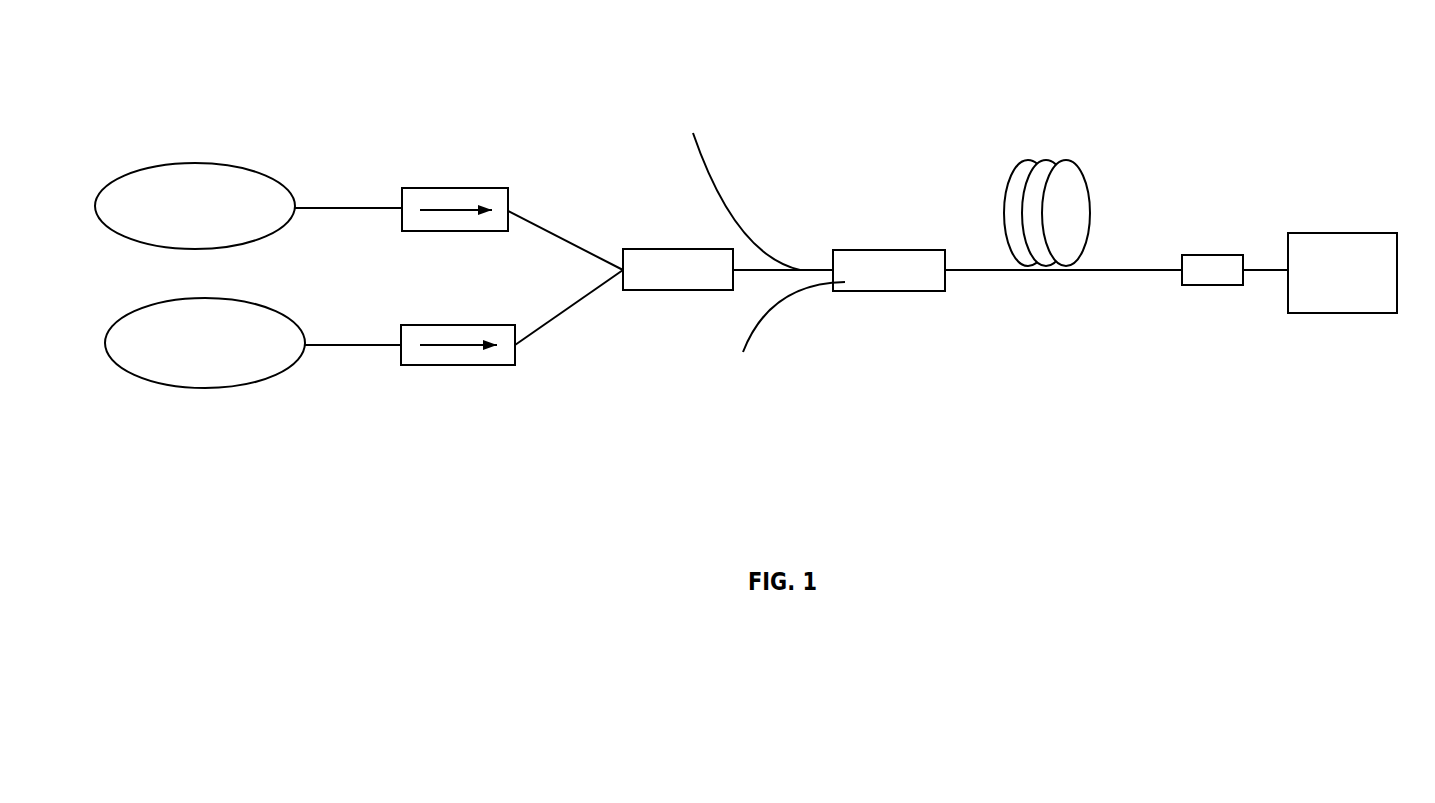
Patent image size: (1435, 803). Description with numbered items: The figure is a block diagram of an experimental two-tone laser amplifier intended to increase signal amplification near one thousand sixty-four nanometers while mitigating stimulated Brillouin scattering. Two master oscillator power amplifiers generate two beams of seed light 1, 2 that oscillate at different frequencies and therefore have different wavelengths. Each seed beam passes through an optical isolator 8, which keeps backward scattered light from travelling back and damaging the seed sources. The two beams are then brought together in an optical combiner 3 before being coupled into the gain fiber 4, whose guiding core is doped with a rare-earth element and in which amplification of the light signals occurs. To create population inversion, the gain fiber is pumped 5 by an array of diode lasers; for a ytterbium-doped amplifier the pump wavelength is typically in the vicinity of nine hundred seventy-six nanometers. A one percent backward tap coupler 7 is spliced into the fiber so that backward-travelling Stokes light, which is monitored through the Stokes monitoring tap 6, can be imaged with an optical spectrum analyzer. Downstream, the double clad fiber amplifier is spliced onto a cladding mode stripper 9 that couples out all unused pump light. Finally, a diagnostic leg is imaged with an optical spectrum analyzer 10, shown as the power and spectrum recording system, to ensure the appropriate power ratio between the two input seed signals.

The beam of seed light 1 is at (356, 207).
The beam of seed light 2 is at (367, 347).
The optical combiner 3 is at (668, 292).
The gain fiber 4 is at (1082, 264).
The pump 5 is at (704, 148).
The Stokes monitoring tap 6 is at (797, 382).
The backward tap coupler 7 is at (905, 249).
The optical isolator 8 is at (470, 176).
The cladding mode stripper 9 is at (1220, 253).
The optical spectrum analyzer 10 is at (1332, 316).